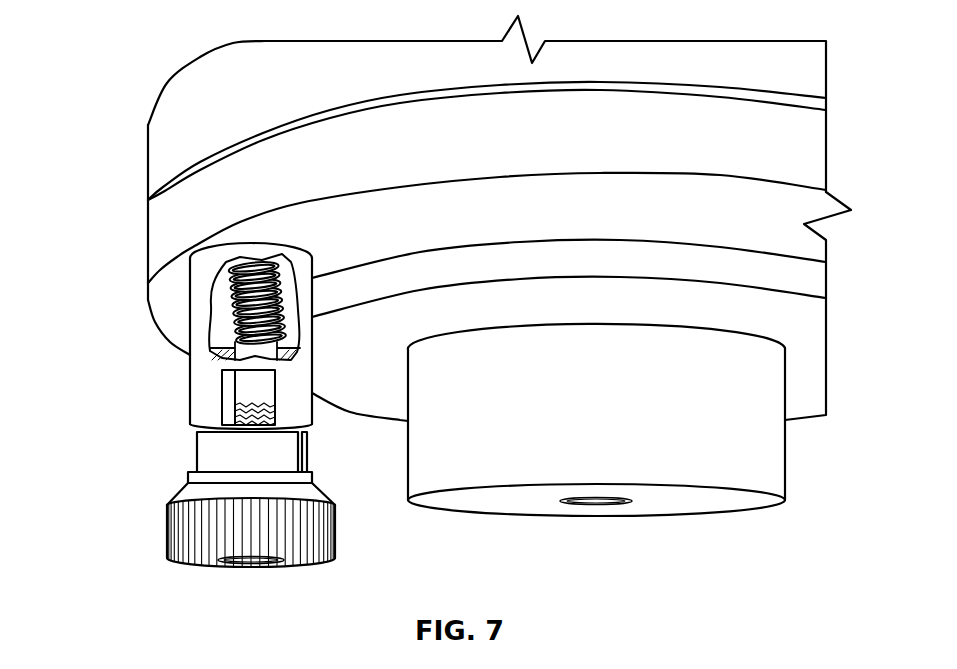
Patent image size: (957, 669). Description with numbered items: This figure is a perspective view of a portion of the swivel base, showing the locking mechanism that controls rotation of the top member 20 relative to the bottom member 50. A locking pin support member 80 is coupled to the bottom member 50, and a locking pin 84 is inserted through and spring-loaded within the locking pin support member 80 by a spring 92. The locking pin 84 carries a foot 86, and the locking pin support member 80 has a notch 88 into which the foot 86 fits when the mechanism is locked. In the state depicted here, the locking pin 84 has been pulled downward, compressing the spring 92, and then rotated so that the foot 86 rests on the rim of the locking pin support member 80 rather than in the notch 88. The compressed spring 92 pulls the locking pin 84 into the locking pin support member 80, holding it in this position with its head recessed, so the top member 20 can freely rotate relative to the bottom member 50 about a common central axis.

The top member 20 is at (168, 132).
The bottom member 50 is at (168, 232).
The locking pin support member 80 is at (203, 369).
The spring 92 is at (207, 300).
The notch 88 is at (232, 397).
The foot 86 is at (210, 457).
The locking pin 84 is at (208, 523).